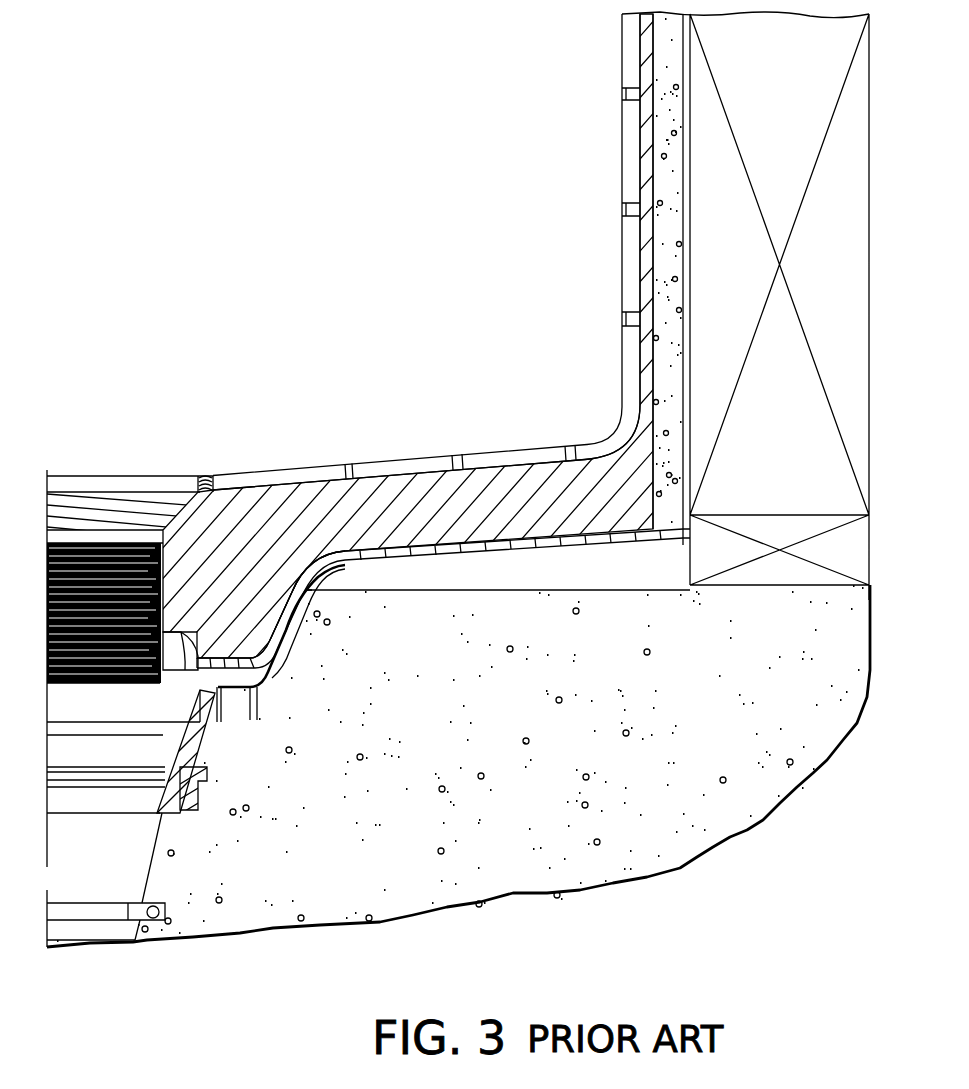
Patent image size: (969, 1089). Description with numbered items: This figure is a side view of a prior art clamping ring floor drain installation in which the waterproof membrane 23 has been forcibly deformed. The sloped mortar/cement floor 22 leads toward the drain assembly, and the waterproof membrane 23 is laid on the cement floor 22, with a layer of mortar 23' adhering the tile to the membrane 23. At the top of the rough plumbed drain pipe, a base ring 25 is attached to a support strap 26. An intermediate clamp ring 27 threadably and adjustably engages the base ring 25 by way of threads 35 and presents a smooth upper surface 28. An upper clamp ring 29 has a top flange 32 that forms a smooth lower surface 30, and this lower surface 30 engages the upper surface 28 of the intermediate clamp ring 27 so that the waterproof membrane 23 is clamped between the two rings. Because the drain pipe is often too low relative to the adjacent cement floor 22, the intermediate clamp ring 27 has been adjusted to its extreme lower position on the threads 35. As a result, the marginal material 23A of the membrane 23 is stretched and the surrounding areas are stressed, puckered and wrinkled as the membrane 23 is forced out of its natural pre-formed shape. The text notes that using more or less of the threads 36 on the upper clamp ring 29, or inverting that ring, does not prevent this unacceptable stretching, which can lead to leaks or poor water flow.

The mortar/cement floor 22 is at (478, 583).
The waterproof membrane 23 is at (443, 598).
The layer of mortar 23' is at (484, 350).
The marginal material 23A is at (280, 603).
The base ring 25 is at (177, 817).
The support strap 26 is at (167, 910).
The intermediate clamp ring 27 is at (213, 742).
The upper surface 28 is at (247, 690).
The upper clamp ring 29 is at (233, 657).
The lower surface 30 is at (207, 693).
The top flange 32 is at (296, 637).
The threads 35 is at (197, 790).
The threads 36 is at (163, 686).